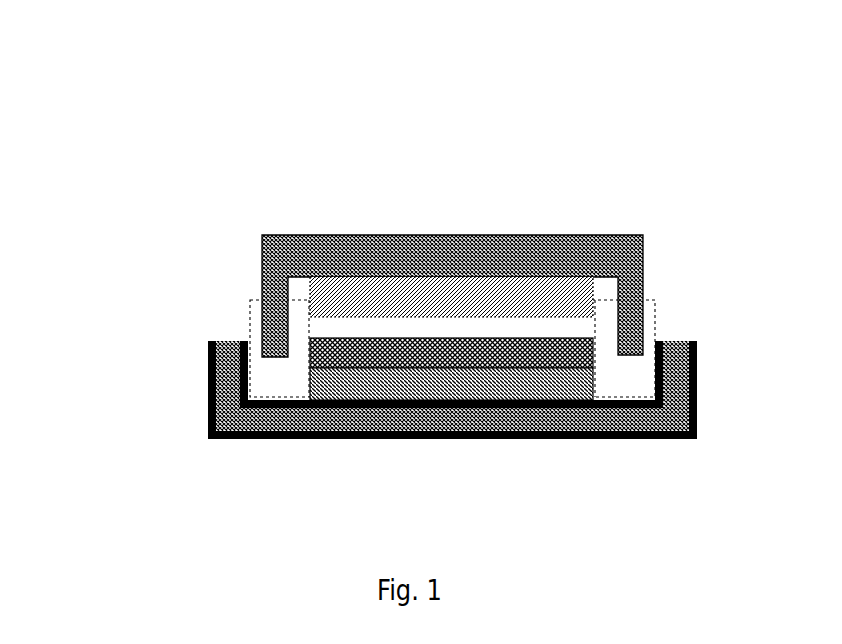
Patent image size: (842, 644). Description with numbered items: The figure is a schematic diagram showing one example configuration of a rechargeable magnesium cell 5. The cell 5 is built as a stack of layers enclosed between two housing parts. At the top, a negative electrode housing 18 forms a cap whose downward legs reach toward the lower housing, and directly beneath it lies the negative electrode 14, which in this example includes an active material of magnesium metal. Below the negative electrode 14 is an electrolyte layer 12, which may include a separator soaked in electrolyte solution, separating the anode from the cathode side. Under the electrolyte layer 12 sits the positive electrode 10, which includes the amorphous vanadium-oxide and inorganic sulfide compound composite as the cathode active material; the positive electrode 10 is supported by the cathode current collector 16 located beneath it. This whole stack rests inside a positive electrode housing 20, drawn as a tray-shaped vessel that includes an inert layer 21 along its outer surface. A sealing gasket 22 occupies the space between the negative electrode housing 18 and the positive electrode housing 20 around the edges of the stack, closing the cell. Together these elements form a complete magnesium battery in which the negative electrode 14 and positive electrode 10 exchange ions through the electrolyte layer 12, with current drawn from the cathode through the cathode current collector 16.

The rechargeable magnesium cell 5 is at (520, 125).
The positive electrode 10 is at (597, 352).
The electrolyte layer 12 is at (317, 322).
The negative electrode 14 is at (567, 303).
The cathode current collector 16 is at (306, 388).
The negative electrode housing 18 is at (437, 238).
The positive electrode housing 20 is at (233, 382).
The inert layer 21 is at (213, 443).
The sealing gasket 22 is at (632, 366).